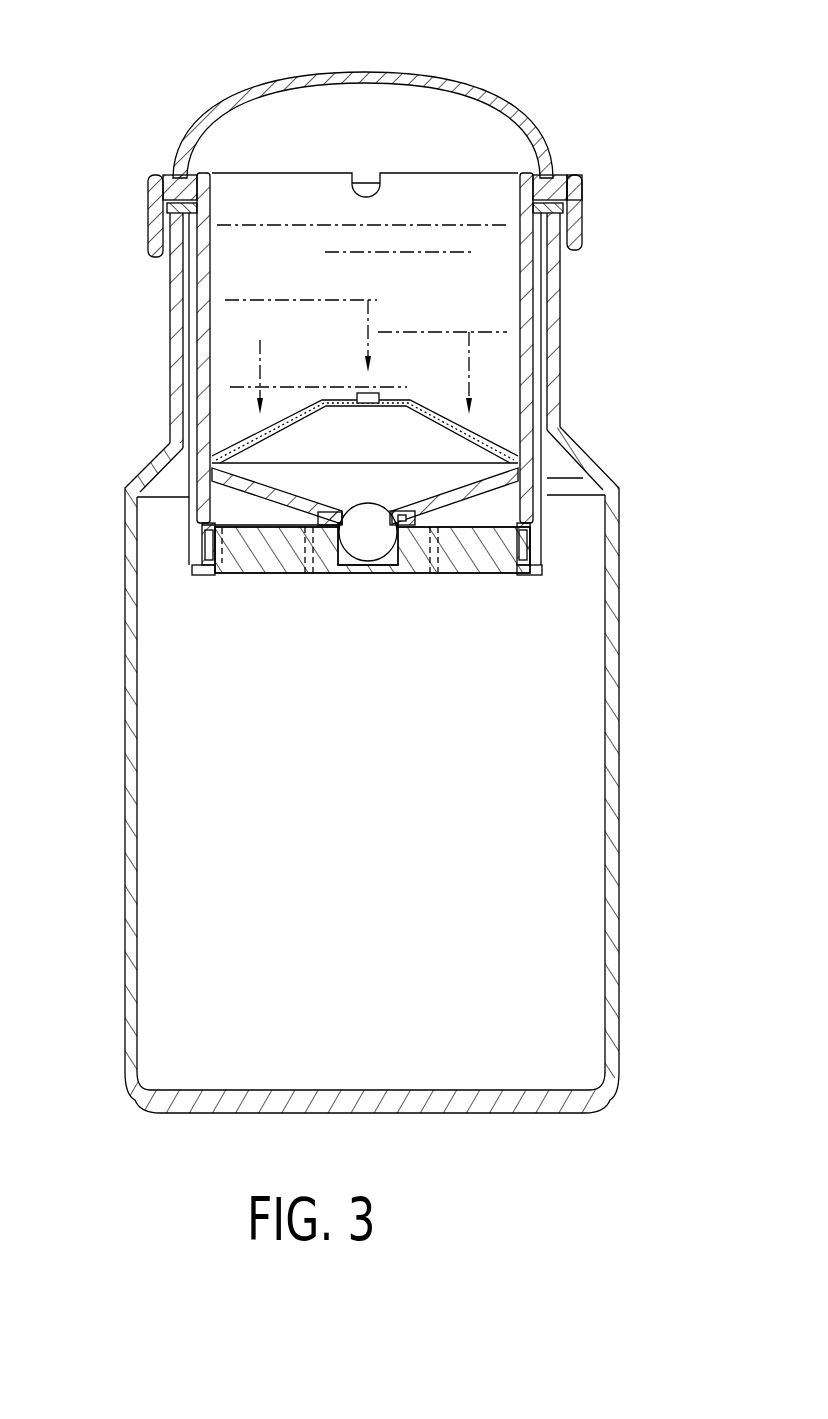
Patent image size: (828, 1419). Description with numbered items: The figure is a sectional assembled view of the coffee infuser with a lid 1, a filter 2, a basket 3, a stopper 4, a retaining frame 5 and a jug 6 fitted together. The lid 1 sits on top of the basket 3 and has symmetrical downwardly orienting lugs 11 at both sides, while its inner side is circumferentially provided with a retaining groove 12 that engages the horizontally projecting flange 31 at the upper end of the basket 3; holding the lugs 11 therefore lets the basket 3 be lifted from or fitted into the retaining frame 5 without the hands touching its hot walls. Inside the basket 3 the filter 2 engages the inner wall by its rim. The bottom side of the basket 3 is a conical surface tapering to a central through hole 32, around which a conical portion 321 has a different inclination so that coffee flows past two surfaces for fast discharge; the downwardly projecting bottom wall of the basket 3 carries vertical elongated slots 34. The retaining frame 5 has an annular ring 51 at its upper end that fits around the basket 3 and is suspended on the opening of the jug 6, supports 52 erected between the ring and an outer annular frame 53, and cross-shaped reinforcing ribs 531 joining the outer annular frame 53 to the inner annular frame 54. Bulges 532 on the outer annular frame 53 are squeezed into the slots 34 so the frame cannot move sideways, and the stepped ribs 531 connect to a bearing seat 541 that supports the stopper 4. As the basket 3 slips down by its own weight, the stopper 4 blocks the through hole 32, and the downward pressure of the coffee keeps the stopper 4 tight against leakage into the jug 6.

The lid 1 is at (460, 83).
The lug 11 is at (583, 232).
The retaining groove 12 is at (583, 192).
The filter 2 is at (258, 437).
The basket 3 is at (537, 377).
The flange 31 is at (556, 172).
The through hole 32 is at (417, 503).
The conical portion 321 is at (340, 496).
The slot 34 is at (546, 552).
The stopper 4 is at (382, 548).
The retaining frame 5 is at (472, 585).
The annular ring 51 is at (558, 264).
The support 52 is at (538, 329).
The outer annular frame 53 is at (214, 573).
The reinforcing rib 531 is at (272, 568).
The bulge 532 is at (528, 528).
The inner annular frame 54 is at (306, 575).
The bearing seat 541 is at (383, 542).
The jug 6 is at (613, 926).